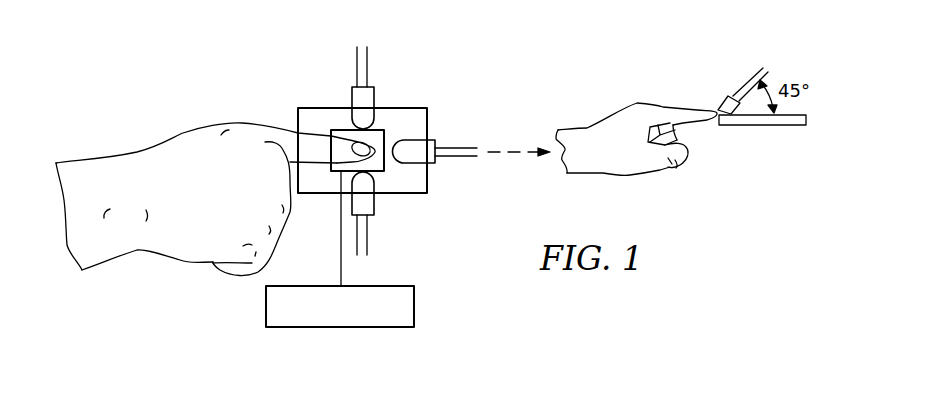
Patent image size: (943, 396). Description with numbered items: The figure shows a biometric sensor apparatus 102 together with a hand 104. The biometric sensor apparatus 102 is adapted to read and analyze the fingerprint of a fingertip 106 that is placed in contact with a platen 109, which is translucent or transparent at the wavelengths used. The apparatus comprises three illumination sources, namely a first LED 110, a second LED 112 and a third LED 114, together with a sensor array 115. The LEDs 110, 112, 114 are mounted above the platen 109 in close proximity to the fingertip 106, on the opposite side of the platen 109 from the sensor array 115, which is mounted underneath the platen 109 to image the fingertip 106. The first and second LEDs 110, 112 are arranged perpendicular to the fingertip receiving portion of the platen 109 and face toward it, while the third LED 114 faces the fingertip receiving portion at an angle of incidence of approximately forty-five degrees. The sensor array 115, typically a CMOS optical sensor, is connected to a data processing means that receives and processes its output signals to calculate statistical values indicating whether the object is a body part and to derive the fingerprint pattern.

The biometric sensor apparatus 102 is at (285, 82).
The hand 104 is at (120, 152).
The fingertip 106 is at (343, 130).
The platen 109 is at (427, 127).
The first LED 110 is at (374, 98).
The second LED 112 is at (374, 200).
The third LED 114 is at (434, 165).
The sensor array 115 is at (386, 165).